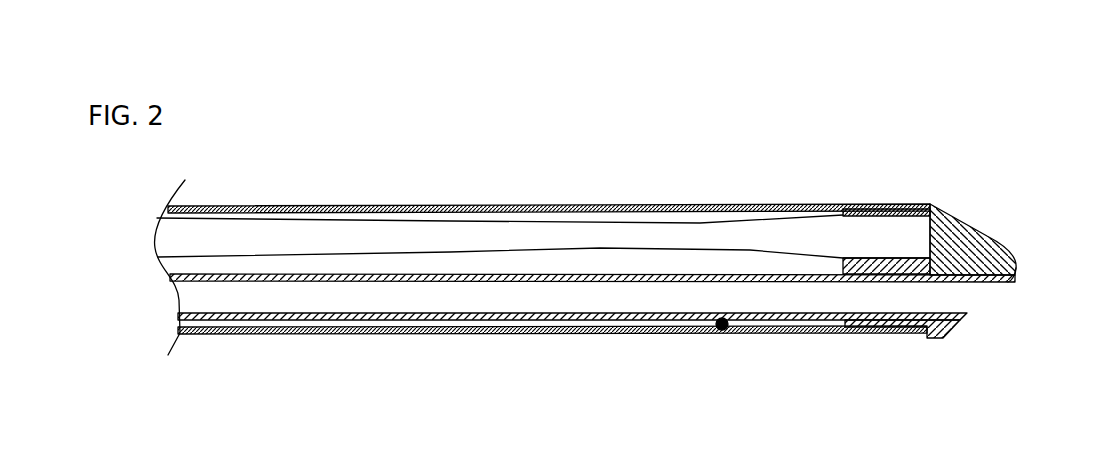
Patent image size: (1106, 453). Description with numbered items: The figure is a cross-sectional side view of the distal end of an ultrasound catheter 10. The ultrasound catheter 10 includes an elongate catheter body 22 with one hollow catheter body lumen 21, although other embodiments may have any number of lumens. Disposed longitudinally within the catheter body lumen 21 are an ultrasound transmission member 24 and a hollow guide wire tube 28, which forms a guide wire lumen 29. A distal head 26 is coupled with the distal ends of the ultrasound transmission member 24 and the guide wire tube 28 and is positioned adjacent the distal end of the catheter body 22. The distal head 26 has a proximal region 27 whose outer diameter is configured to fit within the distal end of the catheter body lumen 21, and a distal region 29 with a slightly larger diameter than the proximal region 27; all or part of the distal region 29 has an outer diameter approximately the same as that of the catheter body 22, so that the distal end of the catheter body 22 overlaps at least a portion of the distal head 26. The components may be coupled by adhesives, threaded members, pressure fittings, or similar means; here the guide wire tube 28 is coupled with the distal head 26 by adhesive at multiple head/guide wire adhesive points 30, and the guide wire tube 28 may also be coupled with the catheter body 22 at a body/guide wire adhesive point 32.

The ultrasound catheter 10 is at (523, 104).
The catheter body lumen 21 is at (683, 262).
The catheter body 22 is at (590, 208).
The ultrasound transmission member 24 is at (300, 237).
The distal head 26 is at (940, 203).
The proximal region 27 is at (893, 213).
The guide wire tube 28 is at (408, 322).
The guide wire lumen 29 is at (988, 237).
The head/guide wire adhesive points 30 is at (1008, 281).
The body/guide wire adhesive point 32 is at (722, 335).